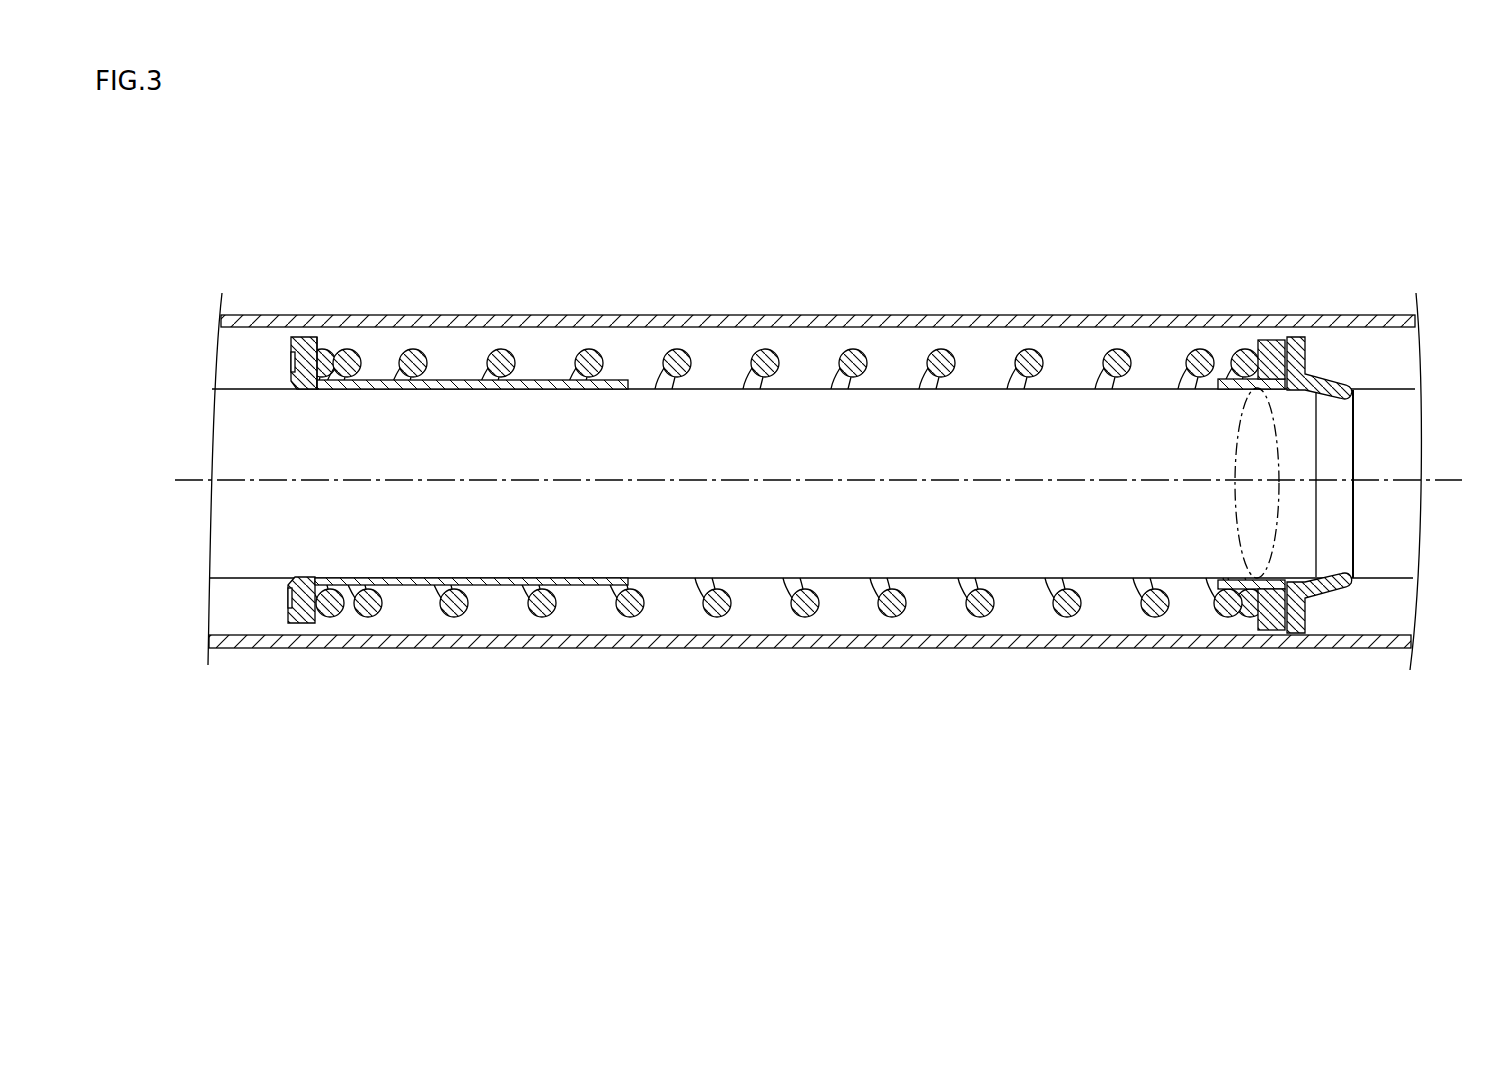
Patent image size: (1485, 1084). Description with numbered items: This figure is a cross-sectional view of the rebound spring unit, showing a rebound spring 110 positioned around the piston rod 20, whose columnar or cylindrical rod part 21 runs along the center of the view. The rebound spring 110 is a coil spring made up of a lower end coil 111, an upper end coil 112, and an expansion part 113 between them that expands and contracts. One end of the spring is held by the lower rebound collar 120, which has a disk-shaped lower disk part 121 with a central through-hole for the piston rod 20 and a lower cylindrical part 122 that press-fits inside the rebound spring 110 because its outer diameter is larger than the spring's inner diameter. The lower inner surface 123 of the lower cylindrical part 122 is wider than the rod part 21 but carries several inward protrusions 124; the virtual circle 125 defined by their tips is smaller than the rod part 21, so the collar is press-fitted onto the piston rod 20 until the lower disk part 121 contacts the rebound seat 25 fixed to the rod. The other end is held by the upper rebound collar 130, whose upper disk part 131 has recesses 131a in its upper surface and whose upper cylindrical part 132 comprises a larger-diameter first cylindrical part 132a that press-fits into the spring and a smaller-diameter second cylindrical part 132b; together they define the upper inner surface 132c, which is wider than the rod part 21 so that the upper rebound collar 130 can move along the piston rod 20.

The piston rod 20 is at (1383, 392).
The rod part 21 is at (888, 389).
The rebound seat 25 is at (1333, 473).
The rebound spring 110 is at (782, 581).
The lower end coil 111 is at (1223, 620).
The upper end coil 112 is at (333, 606).
The expansion part 113 is at (805, 606).
The lower rebound collar 120 is at (1207, 463).
The lower disk part 121 is at (1261, 483).
The lower cylindrical part 122 is at (1225, 379).
The lower inner surface 123 is at (1247, 613).
The protrusions 124 is at (1305, 596).
The virtual circle 125 is at (1278, 447).
The upper rebound collar 130 is at (409, 444).
The upper disk part 131 is at (339, 465).
The recesses 131a is at (290, 600).
The upper cylindrical part 132 is at (409, 465).
The first cylindrical part 132a is at (396, 310).
The second cylindrical part 132b is at (547, 379).
The upper inner surface 132c is at (340, 583).